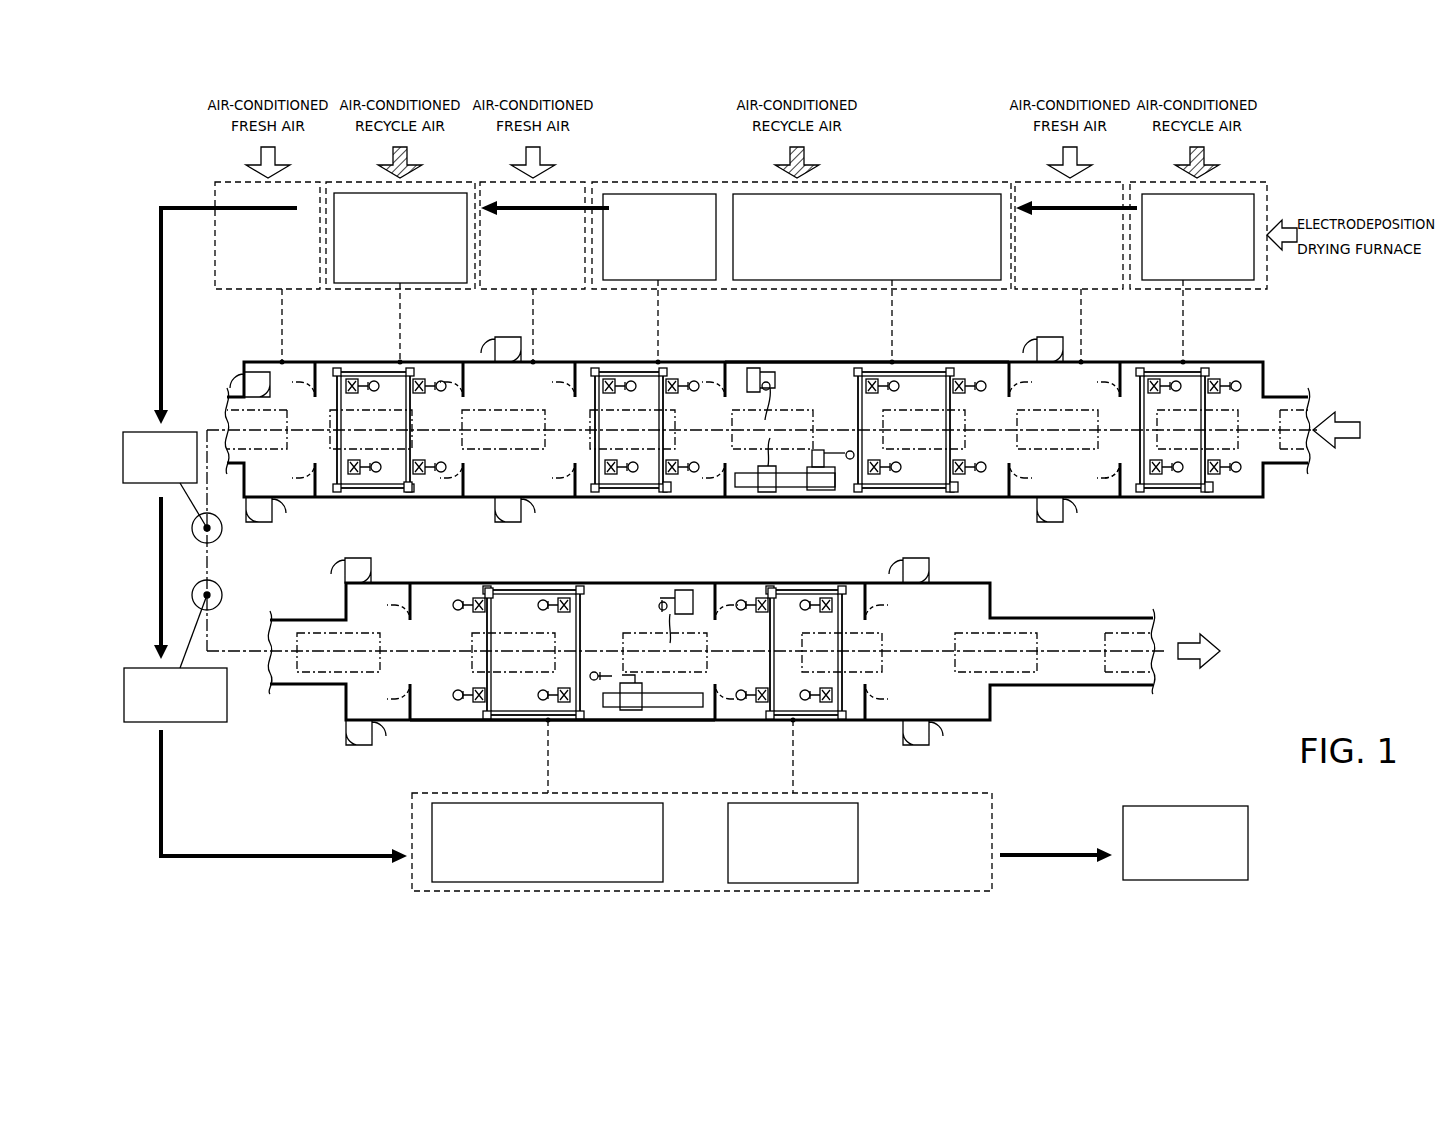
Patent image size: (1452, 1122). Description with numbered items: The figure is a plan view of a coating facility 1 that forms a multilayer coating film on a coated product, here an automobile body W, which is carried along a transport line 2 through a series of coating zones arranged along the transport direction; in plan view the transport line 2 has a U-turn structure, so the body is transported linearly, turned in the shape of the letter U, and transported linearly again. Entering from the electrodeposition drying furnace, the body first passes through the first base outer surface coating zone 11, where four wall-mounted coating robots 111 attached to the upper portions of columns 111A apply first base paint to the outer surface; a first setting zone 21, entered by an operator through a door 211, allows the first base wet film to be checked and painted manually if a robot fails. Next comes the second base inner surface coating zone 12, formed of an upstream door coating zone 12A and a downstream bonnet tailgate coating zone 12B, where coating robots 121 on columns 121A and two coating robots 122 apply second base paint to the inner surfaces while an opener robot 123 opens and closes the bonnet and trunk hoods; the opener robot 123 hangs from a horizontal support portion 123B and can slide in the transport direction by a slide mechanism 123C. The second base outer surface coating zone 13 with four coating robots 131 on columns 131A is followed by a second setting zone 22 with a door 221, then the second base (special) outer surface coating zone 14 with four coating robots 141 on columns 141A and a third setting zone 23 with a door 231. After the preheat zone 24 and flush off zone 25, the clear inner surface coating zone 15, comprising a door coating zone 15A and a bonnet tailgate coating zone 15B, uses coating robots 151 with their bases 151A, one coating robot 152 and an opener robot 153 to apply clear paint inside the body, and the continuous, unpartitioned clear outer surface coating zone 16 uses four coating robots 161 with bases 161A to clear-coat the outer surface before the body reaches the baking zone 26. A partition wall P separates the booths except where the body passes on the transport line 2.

The coating facility 1 is at (1318, 150).
The transport line 2 is at (1264, 438).
The coated product (automobile body) W is at (1292, 410).
The partition wall P is at (1122, 472).
The first base outer surface coating zone 11 is at (1238, 194).
The second base inner surface coating zone 12 is at (958, 194).
The door coating zone 12A is at (906, 345).
The bonnet tailgate coating zone 12B is at (763, 350).
The second base outer surface coating zone 13 is at (682, 194).
The second base (special) outer surface coating zone 14 is at (443, 193).
The clear inner surface coating zone 15 is at (537, 882).
The door coating zone 15A is at (512, 730).
The bonnet tailgate coating zone 15B is at (603, 730).
The clear outer surface coating zone 16 is at (768, 883).
The first setting zone 21 is at (1102, 182).
The second setting zone 22 is at (577, 182).
The third setting zone 23 is at (307, 182).
The preheat zone 24 is at (140, 432).
The flush off zone 25 is at (143, 668).
The baking zone 26 is at (1178, 880).
The coating robot 111 is at (1225, 372).
The column 111A is at (1209, 492).
The coating robot 121 is at (975, 372).
The column 121A is at (950, 492).
The coating robot 122 is at (781, 408).
The opener robot 123 is at (810, 427).
The horizontal support portion 123B is at (794, 488).
The slide mechanism 123C is at (820, 488).
The coating robot 131 is at (682, 378).
The column 131A is at (667, 492).
The coating robot 141 is at (424, 382).
The column 141A is at (408, 492).
The coating robot 151 is at (466, 708).
The robot rail base 151A is at (492, 590).
The coating robot 152 is at (673, 652).
The opener robot 153 is at (633, 708).
The coating robot 161 is at (755, 706).
The robot rail base 161A is at (770, 596).
The door 211 is at (1055, 337).
The door 221 is at (507, 337).
The door 231 is at (238, 372).